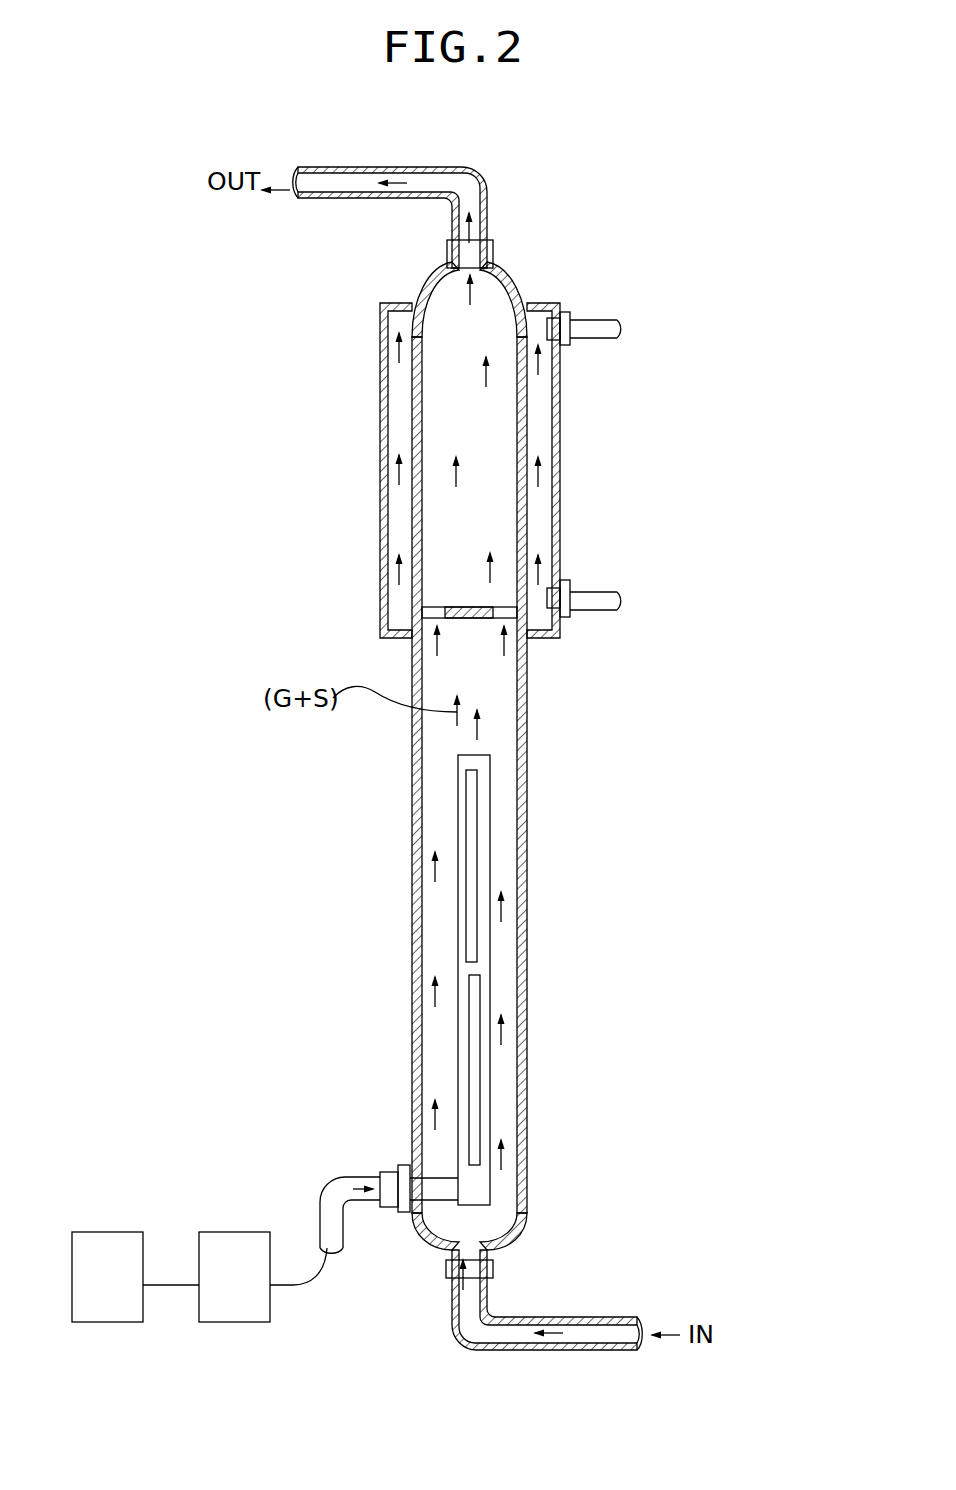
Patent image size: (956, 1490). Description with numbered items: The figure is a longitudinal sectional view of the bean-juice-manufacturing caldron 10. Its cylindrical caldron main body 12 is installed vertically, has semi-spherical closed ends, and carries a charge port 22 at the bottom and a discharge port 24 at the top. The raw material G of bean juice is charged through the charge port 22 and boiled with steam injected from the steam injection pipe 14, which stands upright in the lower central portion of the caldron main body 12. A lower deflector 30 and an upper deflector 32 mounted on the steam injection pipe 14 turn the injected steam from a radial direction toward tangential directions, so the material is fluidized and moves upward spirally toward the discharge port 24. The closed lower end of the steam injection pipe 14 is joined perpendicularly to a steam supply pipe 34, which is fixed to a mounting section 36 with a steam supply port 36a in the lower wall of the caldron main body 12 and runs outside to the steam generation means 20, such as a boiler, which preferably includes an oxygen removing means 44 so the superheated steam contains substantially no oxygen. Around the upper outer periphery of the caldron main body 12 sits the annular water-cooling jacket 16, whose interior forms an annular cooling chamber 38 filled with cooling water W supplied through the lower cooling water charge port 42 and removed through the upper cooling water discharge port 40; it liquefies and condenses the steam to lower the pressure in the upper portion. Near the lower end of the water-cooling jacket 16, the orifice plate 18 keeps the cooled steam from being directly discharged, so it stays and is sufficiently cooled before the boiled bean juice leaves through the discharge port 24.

The bean-juice-manufacturing caldron 10 is at (585, 213).
The caldron main body 12 is at (528, 537).
The steam injection pipe 14 is at (477, 965).
The water-cooling jacket 16 is at (380, 480).
The orifice plate 18 is at (475, 618).
The steam generation means 20 is at (220, 1305).
The charge port 22 is at (473, 1243).
The discharge port 24 is at (425, 295).
The lower deflector 30 is at (472, 1030).
The upper deflector 32 is at (468, 847).
The steam supply pipe 34 is at (437, 1188).
The mounting section 36 is at (385, 1195).
The steam supply port 36a is at (355, 1185).
The annular cooling chamber 38 is at (548, 388).
The cooling water discharge port 40 is at (573, 332).
The cooling water charge port 42 is at (588, 597).
The oxygen removing means 44 is at (95, 1305).
The cooling water W is at (540, 565).
The raw material of bean juice G is at (517, 1153).